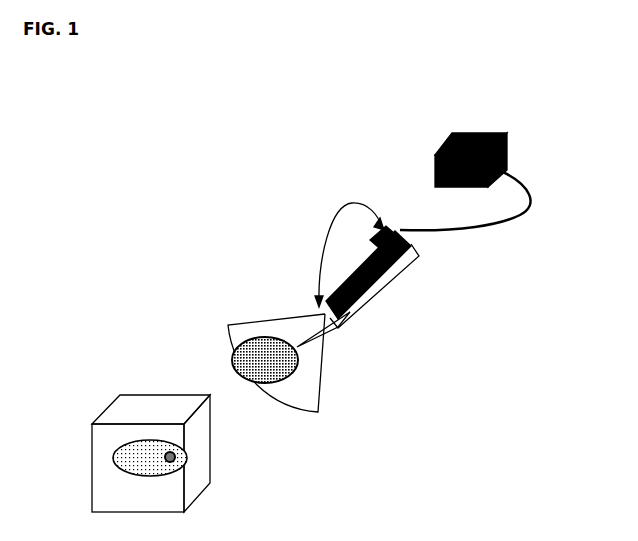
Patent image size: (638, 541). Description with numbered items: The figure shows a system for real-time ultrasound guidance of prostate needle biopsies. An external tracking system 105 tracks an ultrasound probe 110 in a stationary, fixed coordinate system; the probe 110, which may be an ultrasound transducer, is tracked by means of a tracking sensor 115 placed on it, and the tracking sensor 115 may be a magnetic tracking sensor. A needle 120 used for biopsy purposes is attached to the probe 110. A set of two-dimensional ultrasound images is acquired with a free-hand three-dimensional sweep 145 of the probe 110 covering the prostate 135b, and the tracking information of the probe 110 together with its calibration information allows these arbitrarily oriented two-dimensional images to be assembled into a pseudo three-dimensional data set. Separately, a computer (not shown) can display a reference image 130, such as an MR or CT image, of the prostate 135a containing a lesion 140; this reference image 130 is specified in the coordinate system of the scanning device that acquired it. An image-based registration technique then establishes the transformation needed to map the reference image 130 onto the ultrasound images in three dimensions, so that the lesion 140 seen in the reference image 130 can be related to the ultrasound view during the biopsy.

The external tracking system 105 is at (513, 143).
The ultrasound probe 110 is at (343, 282).
The tracking sensor 115 is at (381, 228).
The needle 120 is at (347, 317).
The reference image 130 is at (107, 417).
The prostate 135a is at (122, 472).
The prostate 135b is at (233, 360).
The lesion 140 is at (176, 456).
The free-hand 3D sweep 145 is at (320, 387).